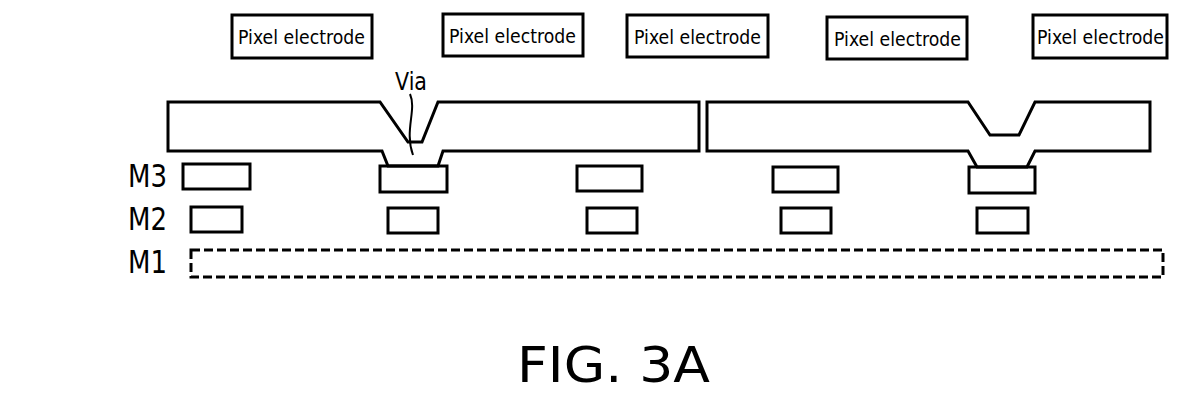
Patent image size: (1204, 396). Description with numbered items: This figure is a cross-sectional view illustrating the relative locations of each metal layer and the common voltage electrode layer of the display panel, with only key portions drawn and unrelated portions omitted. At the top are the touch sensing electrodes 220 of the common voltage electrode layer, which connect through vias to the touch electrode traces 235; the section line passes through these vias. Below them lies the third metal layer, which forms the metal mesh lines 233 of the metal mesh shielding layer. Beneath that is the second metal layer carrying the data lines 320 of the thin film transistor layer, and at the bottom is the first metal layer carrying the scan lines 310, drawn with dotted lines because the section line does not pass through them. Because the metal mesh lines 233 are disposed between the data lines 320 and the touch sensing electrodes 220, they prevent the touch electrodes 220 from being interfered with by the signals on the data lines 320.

The touch sensing electrode 220 is at (167, 128).
The metal mesh line 233 is at (250, 176).
The touch electrode trace 235 is at (447, 178).
The data line 320 is at (242, 219).
The scan line 310 is at (623, 277).